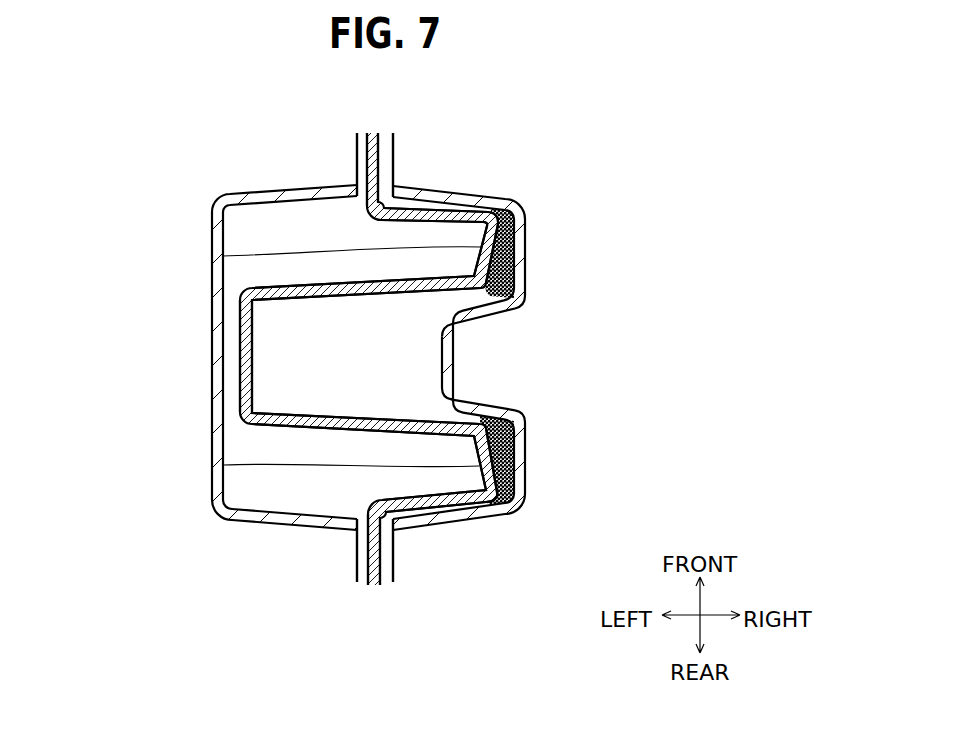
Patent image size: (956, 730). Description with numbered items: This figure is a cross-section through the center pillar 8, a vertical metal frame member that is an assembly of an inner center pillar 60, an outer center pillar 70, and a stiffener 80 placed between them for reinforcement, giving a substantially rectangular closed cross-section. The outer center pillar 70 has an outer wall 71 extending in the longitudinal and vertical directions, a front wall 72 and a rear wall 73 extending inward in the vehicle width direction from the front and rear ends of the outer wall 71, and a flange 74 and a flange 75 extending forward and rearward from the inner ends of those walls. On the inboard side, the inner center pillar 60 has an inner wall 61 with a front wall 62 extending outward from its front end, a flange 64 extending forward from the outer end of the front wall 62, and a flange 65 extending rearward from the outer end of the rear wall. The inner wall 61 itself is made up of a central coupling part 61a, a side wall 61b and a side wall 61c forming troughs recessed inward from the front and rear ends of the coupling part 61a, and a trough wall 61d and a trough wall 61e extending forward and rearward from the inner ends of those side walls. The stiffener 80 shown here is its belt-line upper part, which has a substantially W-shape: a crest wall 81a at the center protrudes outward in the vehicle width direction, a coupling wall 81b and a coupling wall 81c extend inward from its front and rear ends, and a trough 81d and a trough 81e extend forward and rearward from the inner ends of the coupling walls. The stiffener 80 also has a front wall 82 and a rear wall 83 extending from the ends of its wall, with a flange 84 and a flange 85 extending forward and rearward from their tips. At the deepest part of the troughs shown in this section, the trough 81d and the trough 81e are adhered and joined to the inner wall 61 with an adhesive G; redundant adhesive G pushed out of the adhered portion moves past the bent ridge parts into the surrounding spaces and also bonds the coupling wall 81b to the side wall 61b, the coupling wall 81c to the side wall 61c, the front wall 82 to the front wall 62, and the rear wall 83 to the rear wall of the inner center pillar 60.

The center pillar 8 is at (177, 105).
The inner center pillar 60 is at (721, 367).
The inner wall 61 is at (605, 191).
The coupling part 61a is at (455, 358).
The side wall 61b is at (505, 310).
The side wall 61c is at (505, 405).
The trough wall 61d is at (519, 232).
The trough wall 61e is at (520, 495).
The front wall 62 is at (465, 191).
The flange 64 is at (393, 155).
The flange 65 is at (393, 560).
The outer center pillar 70 is at (99, 370).
The outer wall 71 is at (215, 385).
The front wall 72 is at (277, 189).
The rear wall 73 is at (287, 527).
The flange 74 is at (355, 164).
The flange 75 is at (355, 558).
The stiffener 80 is at (297, 362).
The crest wall 81a is at (245, 340).
The coupling wall 81b is at (297, 284).
The coupling wall 81c is at (290, 440).
The trough 81d is at (240, 256).
The trough 81e is at (240, 464).
The front wall 82 is at (377, 222).
The rear wall 83 is at (380, 502).
The flange 84 is at (372, 142).
The flange 85 is at (371, 583).
The adhesive G is at (511, 252).